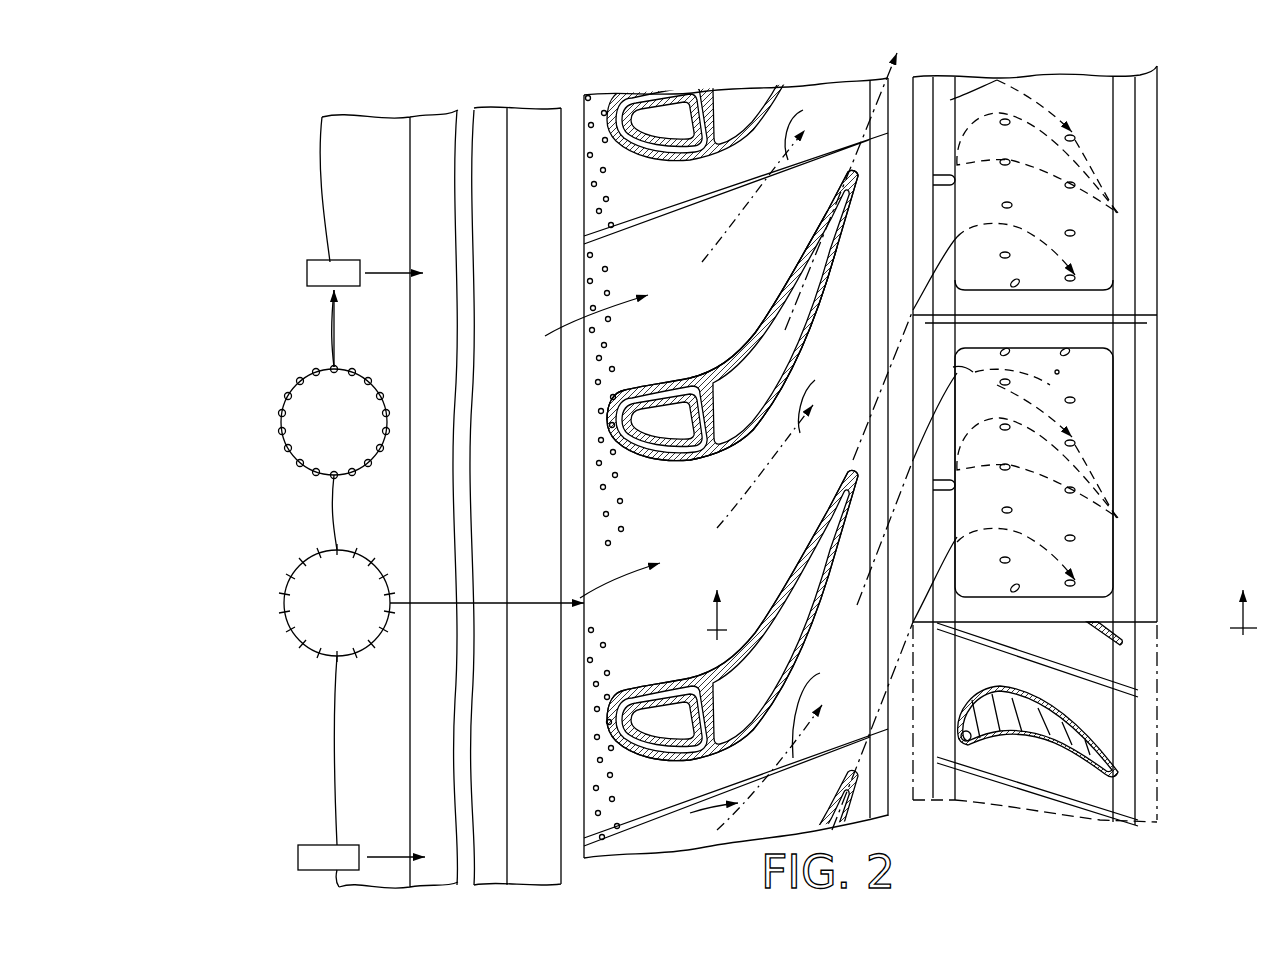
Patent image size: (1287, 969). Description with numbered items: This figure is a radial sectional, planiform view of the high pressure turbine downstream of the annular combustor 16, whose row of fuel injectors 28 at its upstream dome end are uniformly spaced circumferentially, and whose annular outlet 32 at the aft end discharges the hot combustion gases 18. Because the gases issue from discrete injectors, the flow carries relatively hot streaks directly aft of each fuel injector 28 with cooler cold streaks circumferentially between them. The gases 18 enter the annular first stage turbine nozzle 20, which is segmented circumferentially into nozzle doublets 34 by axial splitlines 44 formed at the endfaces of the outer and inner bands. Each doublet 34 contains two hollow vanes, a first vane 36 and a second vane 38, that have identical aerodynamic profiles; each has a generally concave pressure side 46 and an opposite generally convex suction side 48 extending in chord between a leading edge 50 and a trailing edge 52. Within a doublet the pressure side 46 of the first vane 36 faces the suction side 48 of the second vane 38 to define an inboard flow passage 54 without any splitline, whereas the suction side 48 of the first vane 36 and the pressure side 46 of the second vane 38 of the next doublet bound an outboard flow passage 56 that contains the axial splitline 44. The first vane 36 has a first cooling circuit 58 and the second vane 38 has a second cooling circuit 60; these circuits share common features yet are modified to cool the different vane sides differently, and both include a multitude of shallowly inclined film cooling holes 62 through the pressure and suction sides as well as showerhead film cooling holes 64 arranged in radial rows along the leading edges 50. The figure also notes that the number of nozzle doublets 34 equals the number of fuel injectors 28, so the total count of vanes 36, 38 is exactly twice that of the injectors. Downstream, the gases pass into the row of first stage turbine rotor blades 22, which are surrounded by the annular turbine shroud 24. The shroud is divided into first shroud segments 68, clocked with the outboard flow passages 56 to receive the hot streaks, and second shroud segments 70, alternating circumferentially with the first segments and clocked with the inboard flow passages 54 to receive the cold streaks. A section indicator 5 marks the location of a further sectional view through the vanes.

The annular combustor 16 is at (351, 167).
The combustion gases 18 is at (578, 332).
The first stage turbine nozzle 20 is at (588, 96).
The first stage turbine rotor blades 22 is at (1087, 488).
The turbine shroud 24 is at (1160, 120).
The fuel injectors 28 is at (334, 262).
The annular outlet 32 is at (521, 569).
The nozzle doublets 34 is at (300, 645).
The first vane 36 is at (285, 598).
The second vane 38 is at (605, 440).
The axial splitlines 44 is at (605, 222).
The pressure side 46 is at (767, 318).
The suction side 48 is at (742, 452).
The leading edge 50 is at (604, 412).
The trailing edge 52 is at (847, 158).
The inboard flow passage 54 is at (751, 557).
The outboard flow passages 56 is at (731, 281).
The first cooling circuit 58 is at (653, 729).
The second cooling circuit 60 is at (651, 437).
The film cooling holes 62 is at (690, 458).
The showerhead film cooling holes 64 is at (613, 700).
The first shroud segments 68 is at (1158, 385).
The second shroud segments 70 is at (1158, 215).
The section line 5 is at (982, 597).